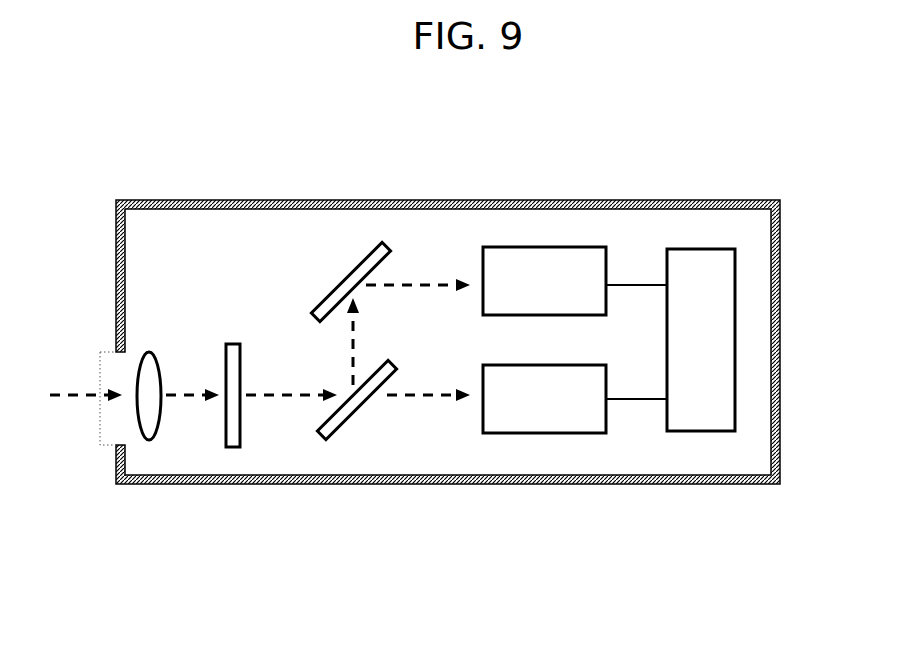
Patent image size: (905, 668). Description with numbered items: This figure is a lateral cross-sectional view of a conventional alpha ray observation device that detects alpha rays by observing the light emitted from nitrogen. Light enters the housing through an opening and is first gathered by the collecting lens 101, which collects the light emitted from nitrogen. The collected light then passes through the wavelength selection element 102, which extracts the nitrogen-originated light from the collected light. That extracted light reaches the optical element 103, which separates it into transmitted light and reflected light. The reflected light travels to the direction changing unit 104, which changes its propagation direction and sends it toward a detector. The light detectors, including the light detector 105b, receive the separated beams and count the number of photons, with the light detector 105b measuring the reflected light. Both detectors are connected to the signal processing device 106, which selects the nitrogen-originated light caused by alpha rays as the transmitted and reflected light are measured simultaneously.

The collecting lens 101 is at (148, 440).
The wavelength selection element 102 is at (235, 447).
The optical element 103 is at (342, 427).
The direction changing unit 104 is at (352, 266).
The light detector 105b is at (548, 247).
The signal processing device 106 is at (705, 249).